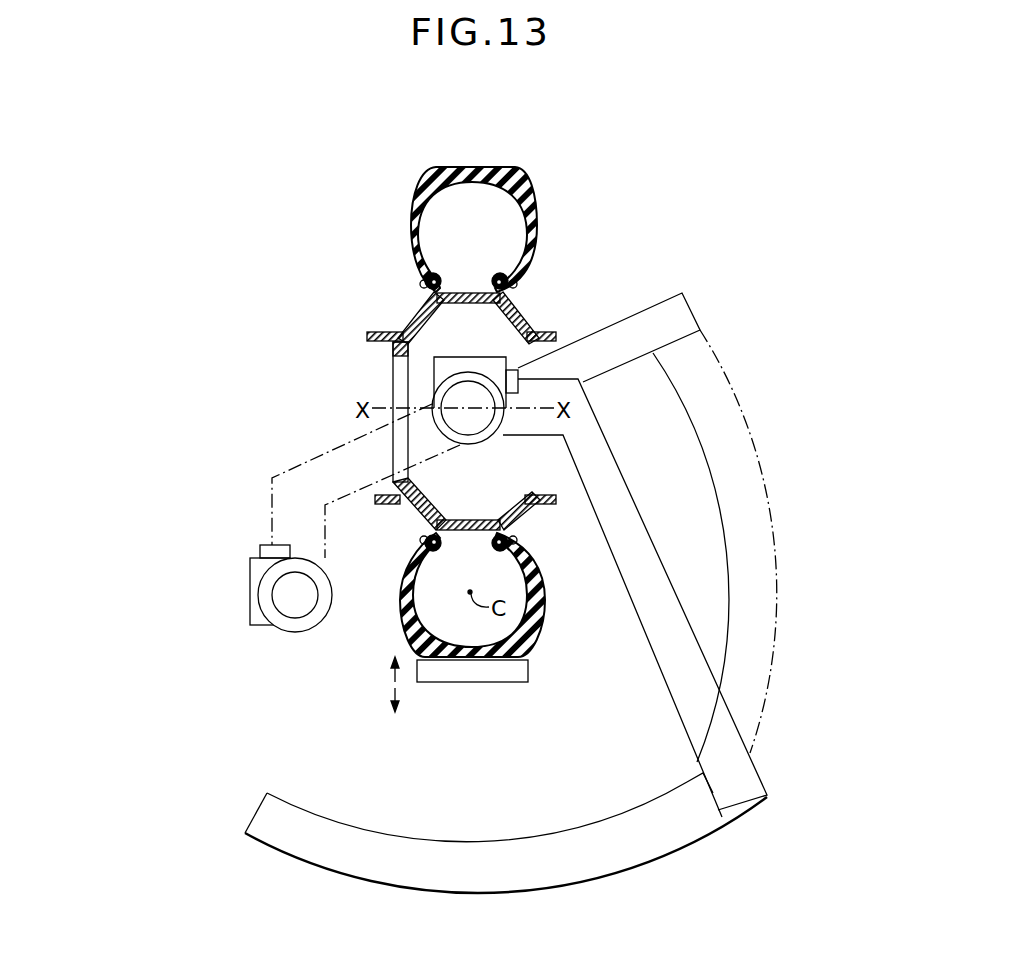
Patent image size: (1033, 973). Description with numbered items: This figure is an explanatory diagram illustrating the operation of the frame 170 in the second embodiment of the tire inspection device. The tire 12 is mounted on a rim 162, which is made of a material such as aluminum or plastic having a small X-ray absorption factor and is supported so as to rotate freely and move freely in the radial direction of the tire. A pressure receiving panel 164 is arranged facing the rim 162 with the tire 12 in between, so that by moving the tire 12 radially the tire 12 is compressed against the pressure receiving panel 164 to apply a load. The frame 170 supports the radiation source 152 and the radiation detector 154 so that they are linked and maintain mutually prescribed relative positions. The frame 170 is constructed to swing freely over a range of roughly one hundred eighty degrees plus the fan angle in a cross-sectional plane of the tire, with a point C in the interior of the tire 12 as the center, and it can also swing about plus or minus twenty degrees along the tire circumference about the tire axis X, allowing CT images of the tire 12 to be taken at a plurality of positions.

The tire 12 is at (476, 168).
The radiation source 152 is at (473, 436).
The rim 162 is at (412, 507).
The pressure receiving panel 164 is at (447, 680).
The frame 170 is at (650, 628).
The radiation detector 154 is at (470, 890).